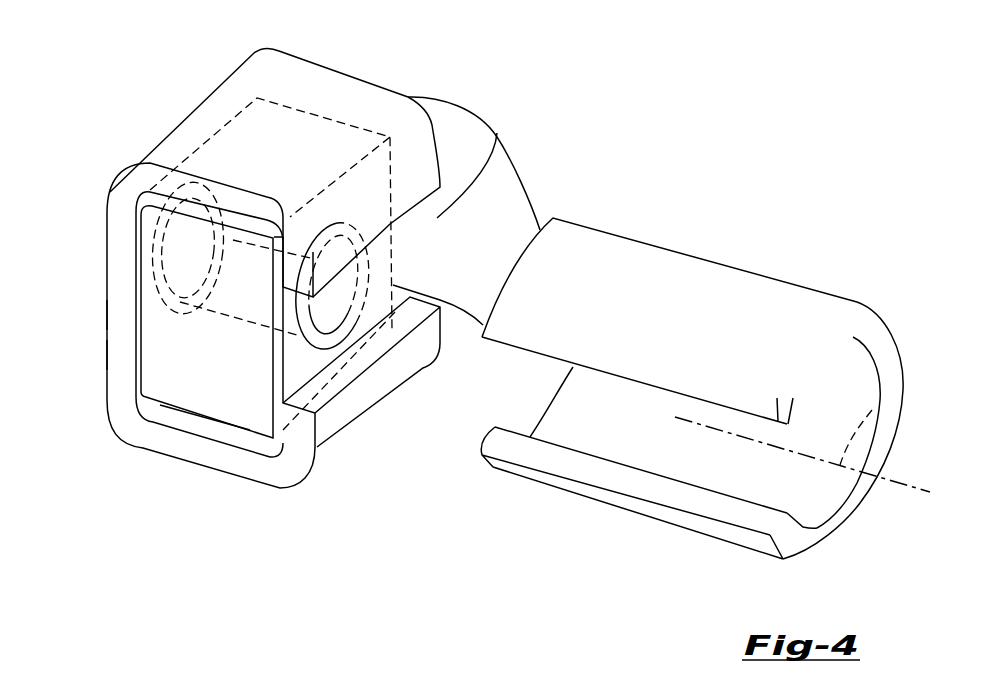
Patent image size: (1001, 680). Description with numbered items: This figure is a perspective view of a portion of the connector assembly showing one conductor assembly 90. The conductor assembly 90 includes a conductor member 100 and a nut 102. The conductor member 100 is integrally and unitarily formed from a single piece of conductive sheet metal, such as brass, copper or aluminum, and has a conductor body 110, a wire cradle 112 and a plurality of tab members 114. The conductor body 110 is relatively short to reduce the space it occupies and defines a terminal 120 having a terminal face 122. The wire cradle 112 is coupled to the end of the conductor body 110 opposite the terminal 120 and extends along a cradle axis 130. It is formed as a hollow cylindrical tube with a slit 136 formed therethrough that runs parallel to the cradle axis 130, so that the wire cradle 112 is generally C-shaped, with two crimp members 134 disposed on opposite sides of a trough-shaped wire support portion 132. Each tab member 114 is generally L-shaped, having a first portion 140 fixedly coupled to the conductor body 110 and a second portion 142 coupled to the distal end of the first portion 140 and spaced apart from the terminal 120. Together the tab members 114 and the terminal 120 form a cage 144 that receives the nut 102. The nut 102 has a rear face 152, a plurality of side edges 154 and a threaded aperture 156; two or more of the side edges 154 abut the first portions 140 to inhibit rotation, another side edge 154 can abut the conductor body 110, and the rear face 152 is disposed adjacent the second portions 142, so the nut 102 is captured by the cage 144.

The conductor assembly 90 is at (378, 470).
The conductor member 100 is at (603, 100).
The nut 102 is at (168, 332).
The conductor body 110 is at (497, 133).
The wire cradle 112 is at (701, 256).
The tab members 114 is at (90, 50).
The terminal 120 is at (120, 357).
The terminal face 122 is at (107, 345).
The cradle axis 130 is at (866, 415).
The wire support portion 132 is at (820, 478).
The crimp member 134 is at (757, 293).
The slit 136 is at (715, 462).
The first portion 140 is at (178, 190).
The second portion 142 is at (302, 258).
The cage 144 is at (192, 424).
The rear face 152 is at (385, 261).
The side edges 154 is at (157, 222).
The threaded aperture 156 is at (323, 303).